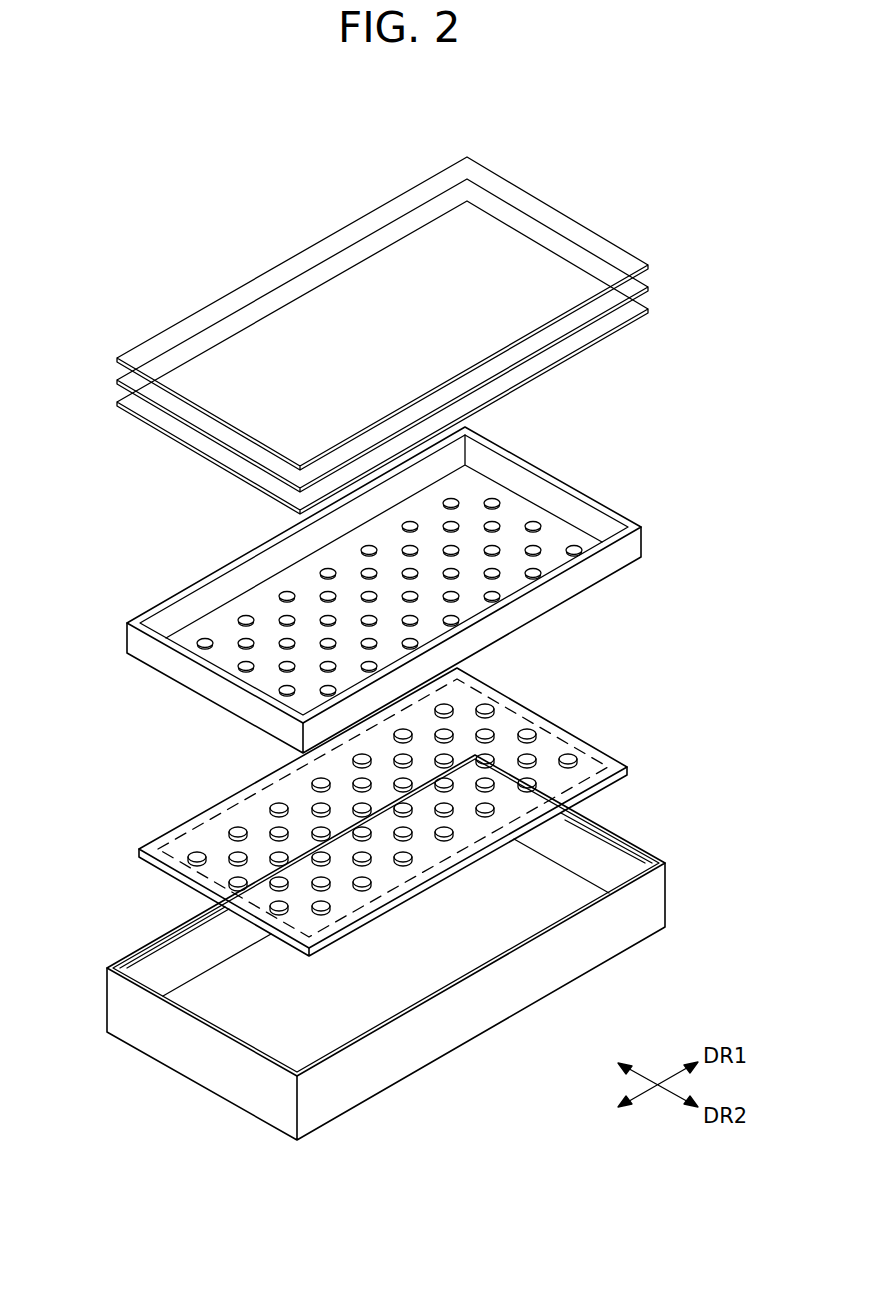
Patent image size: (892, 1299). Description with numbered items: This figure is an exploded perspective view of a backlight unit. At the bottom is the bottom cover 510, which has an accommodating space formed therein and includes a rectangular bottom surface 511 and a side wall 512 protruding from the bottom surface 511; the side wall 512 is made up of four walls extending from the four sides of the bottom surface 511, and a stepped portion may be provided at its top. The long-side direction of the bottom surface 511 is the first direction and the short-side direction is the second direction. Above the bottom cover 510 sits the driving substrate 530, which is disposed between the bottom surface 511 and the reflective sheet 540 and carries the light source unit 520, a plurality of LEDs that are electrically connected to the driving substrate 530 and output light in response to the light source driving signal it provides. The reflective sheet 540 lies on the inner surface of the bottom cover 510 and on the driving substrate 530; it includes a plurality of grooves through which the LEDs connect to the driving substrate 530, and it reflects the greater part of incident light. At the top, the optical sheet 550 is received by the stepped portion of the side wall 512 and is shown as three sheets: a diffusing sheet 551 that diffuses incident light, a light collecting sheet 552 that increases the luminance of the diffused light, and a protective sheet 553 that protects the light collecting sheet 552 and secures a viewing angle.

The bottom cover 510 is at (463, 947).
The bottom surface 511 is at (558, 893).
The side wall 512 is at (655, 900).
The light source unit 520 is at (626, 766).
The driving substrate 530 is at (448, 812).
The reflective sheet 540 is at (647, 541).
The optical sheet 550 is at (474, 335).
The diffusing sheet 551 is at (650, 310).
The light collecting sheet 552 is at (650, 288).
The protective sheet 553 is at (650, 266).